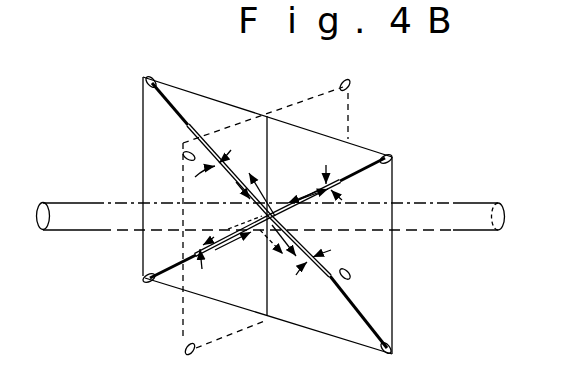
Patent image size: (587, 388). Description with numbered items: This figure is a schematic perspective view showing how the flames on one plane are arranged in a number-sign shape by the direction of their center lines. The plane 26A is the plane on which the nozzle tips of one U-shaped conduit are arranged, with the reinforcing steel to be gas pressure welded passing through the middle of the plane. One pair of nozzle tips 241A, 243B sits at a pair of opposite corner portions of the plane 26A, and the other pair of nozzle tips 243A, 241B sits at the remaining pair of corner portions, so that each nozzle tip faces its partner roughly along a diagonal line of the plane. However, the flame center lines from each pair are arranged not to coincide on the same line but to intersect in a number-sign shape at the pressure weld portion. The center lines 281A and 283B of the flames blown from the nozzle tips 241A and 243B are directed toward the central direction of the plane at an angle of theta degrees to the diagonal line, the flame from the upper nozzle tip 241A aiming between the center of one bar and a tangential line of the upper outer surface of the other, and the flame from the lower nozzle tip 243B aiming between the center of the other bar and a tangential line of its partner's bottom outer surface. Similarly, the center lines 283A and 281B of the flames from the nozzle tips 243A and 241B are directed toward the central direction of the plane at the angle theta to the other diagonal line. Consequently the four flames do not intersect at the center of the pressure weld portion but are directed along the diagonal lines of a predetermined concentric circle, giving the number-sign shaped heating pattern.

The plane 26A is at (358, 152).
The nozzle tip 241A is at (393, 160).
The nozzle tip 241B is at (393, 348).
The nozzle tip 243A is at (147, 76).
The nozzle tip 243B is at (151, 284).
The flame center line 281A is at (313, 187).
The flame center line 281B is at (318, 265).
The flame center line 283A is at (186, 132).
The flame center line 283B is at (236, 238).